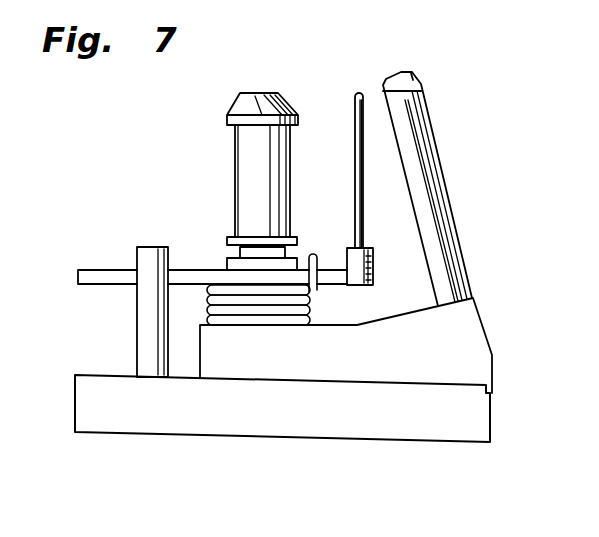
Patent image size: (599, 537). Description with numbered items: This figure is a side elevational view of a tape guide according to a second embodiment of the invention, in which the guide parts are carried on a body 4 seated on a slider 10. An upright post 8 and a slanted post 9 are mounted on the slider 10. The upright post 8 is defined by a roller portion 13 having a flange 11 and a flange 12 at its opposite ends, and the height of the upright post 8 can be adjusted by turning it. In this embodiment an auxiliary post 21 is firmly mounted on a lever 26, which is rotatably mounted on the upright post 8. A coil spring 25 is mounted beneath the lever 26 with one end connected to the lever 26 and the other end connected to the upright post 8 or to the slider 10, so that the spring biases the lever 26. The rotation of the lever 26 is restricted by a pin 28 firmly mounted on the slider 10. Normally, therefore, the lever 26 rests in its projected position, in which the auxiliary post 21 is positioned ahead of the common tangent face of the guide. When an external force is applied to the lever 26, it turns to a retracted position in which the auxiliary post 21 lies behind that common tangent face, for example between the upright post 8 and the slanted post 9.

The body block 4 is at (498, 179).
The upright post 8 is at (226, 148).
The slanted post 9 is at (413, 98).
The slider 10 is at (387, 422).
The flange 11 is at (268, 104).
The flange 12 is at (293, 237).
The roller portion 13 is at (282, 157).
The auxiliary post 21 is at (362, 195).
The coil spring 25 is at (297, 323).
The lever 26 is at (195, 268).
The pin 28 is at (147, 256).